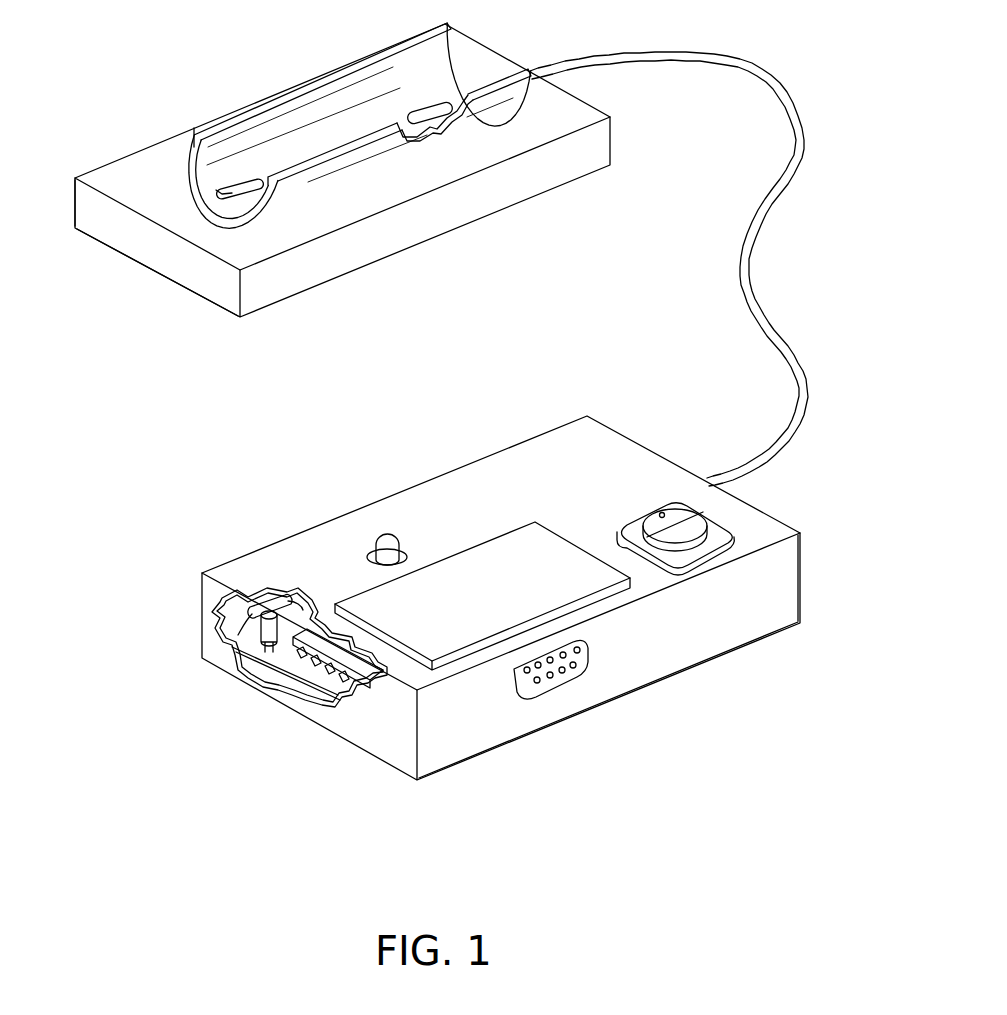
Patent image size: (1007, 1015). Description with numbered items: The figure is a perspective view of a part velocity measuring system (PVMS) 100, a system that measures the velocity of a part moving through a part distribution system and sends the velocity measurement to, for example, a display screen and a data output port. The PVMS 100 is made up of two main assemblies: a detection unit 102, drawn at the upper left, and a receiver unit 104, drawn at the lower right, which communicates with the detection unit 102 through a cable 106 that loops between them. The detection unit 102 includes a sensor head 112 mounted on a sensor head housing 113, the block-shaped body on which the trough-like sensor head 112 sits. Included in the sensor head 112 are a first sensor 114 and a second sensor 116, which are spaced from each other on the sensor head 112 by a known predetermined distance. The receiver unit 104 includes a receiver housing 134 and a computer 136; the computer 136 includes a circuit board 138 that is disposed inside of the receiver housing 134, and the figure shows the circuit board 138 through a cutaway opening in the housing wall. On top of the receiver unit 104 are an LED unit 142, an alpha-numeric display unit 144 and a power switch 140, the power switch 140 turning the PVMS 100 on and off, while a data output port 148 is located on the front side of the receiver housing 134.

The part velocity measuring system 100 is at (103, 780).
The detection unit 102 is at (91, 248).
The receiver unit 104 is at (796, 523).
The cable 106 is at (745, 62).
The sensor head 112 is at (190, 150).
The sensor head housing 113 is at (163, 278).
The first sensor 114 is at (445, 110).
The second sensor 116 is at (227, 185).
The receiver housing 134 is at (800, 604).
The computer 136 is at (233, 690).
The circuit board 138 is at (307, 690).
The power switch 140 is at (660, 505).
The LED unit 142 is at (382, 533).
The alpha-numeric display unit 144 is at (474, 580).
The data output port 148 is at (558, 684).